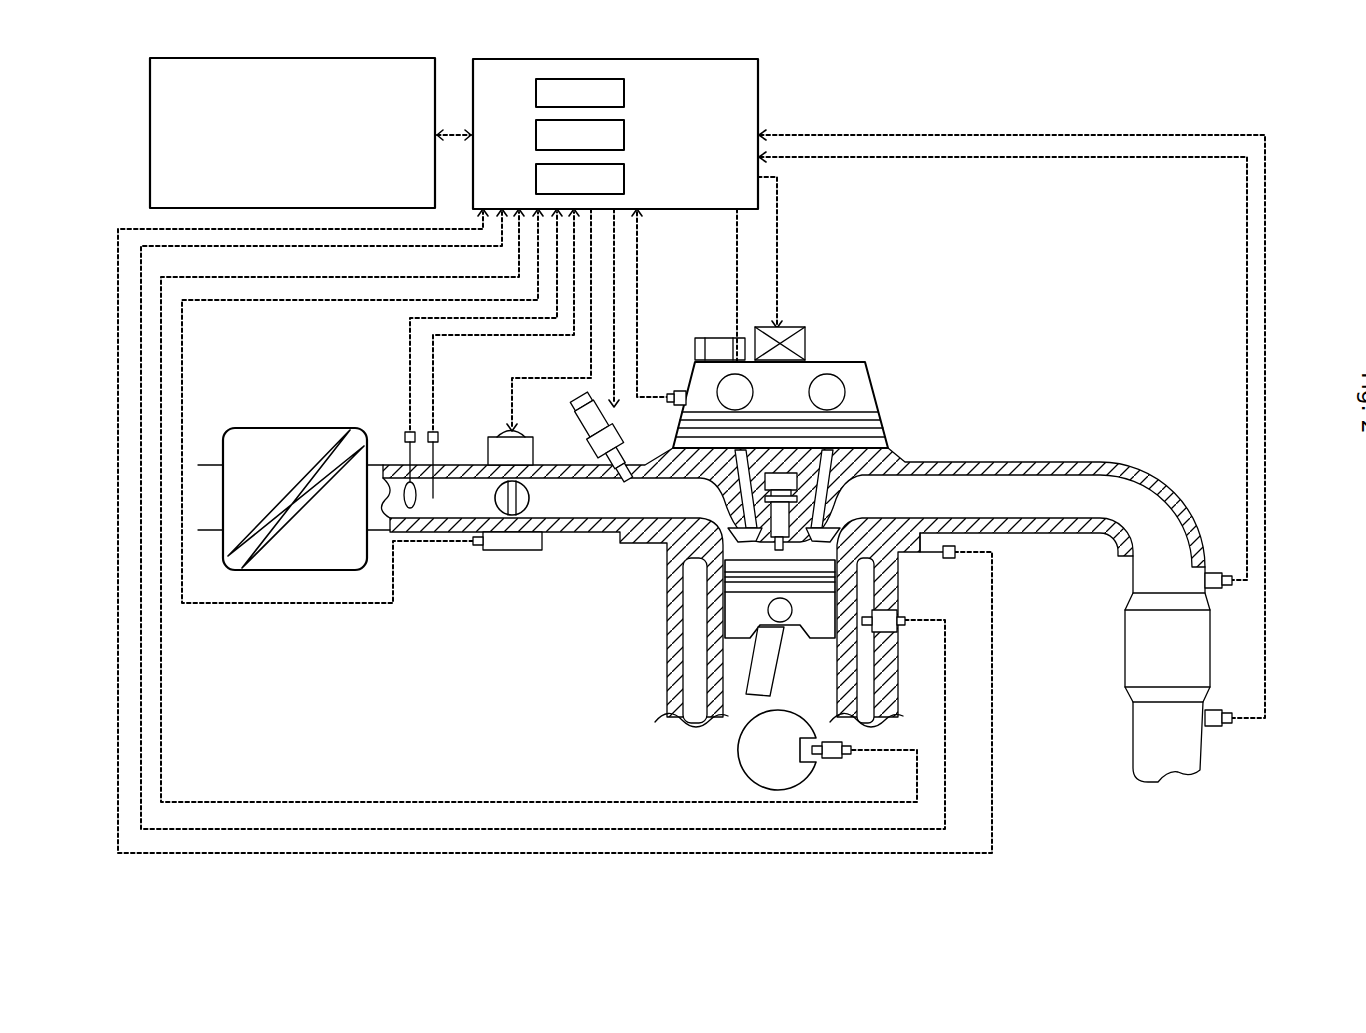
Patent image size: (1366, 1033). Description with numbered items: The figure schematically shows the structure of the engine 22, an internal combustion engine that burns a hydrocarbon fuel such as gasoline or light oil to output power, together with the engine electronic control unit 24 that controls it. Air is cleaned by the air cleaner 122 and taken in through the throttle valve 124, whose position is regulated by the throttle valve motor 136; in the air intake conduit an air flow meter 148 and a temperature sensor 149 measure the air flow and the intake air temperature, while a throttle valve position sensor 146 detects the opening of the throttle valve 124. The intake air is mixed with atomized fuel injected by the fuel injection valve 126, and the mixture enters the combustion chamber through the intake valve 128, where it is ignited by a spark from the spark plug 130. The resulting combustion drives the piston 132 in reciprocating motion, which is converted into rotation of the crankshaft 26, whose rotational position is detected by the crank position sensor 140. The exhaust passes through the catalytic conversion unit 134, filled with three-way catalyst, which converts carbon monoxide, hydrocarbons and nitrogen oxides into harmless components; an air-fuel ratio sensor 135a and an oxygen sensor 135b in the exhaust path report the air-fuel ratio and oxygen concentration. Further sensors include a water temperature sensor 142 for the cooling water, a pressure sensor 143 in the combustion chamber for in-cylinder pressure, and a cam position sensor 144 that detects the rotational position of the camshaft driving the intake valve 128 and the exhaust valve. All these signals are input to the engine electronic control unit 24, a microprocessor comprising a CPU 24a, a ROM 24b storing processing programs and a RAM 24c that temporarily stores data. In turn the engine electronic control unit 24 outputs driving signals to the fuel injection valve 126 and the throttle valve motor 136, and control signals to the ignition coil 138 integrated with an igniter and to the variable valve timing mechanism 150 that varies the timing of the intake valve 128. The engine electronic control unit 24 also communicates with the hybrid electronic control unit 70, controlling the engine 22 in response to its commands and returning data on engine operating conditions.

The hybrid electronic control unit 70 is at (292, 58).
The engine electronic control unit 24 is at (619, 59).
The CPU 24a is at (624, 97).
The ROM 24b is at (624, 138).
The RAM 24c is at (624, 182).
The engine 22 is at (826, 293).
The variable valve timing mechanism 150 is at (878, 400).
The ignition coil 138 is at (805, 345).
The cam position sensor 144 is at (673, 393).
The air cleaner 122 is at (293, 428).
The throttle valve 124 is at (530, 495).
The throttle valve motor 136 is at (491, 437).
The air flow meter 148 is at (407, 432).
The temperature sensor 149 is at (435, 432).
The throttle valve position sensor 146 is at (512, 550).
The fuel injection valve 126 is at (600, 468).
The intake valve 128 is at (745, 523).
The spark plug 130 is at (790, 527).
The piston 132 is at (742, 610).
The crankshaft 26 is at (738, 750).
The crank position sensor 140 is at (832, 760).
The water temperature sensor 142 is at (887, 610).
The pressure sensor 143 is at (957, 552).
The catalytic conversion unit 134 is at (1137, 630).
The air-fuel ratio sensor 135a is at (1213, 572).
The oxygen sensor 135b is at (1215, 727).